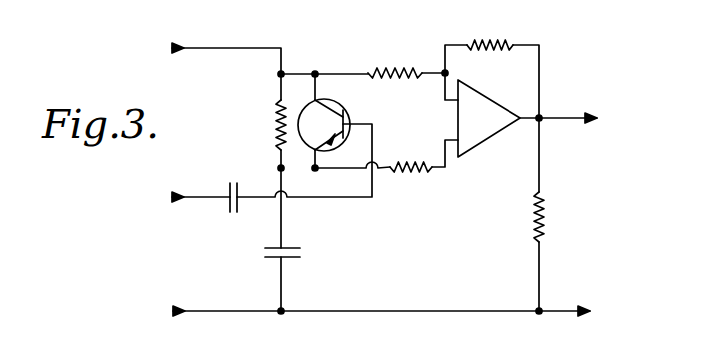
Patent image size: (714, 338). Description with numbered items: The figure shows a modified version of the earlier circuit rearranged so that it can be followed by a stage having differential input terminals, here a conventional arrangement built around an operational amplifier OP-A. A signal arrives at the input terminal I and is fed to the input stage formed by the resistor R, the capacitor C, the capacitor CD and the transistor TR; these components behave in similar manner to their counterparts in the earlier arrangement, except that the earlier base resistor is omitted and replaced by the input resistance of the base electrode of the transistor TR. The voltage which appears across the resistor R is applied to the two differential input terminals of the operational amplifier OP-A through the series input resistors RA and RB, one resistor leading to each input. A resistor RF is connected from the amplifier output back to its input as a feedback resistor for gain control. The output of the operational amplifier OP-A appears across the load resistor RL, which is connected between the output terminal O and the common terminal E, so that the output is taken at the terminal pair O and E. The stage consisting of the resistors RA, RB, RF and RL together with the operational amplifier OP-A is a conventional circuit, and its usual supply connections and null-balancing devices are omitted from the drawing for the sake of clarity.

The input terminal I is at (214, 55).
The resistor R is at (266, 121).
The transistor TR is at (335, 105).
The series input resistor RA is at (413, 72).
The feedback resistor RF is at (492, 79).
The operational amplifier OP-A is at (489, 118).
The output terminal O is at (569, 118).
The series input resistor RB is at (386, 167).
The capacitor CD is at (272, 180).
The capacitor C is at (293, 239).
The load resistor RL is at (554, 214).
The common terminal E is at (381, 298).